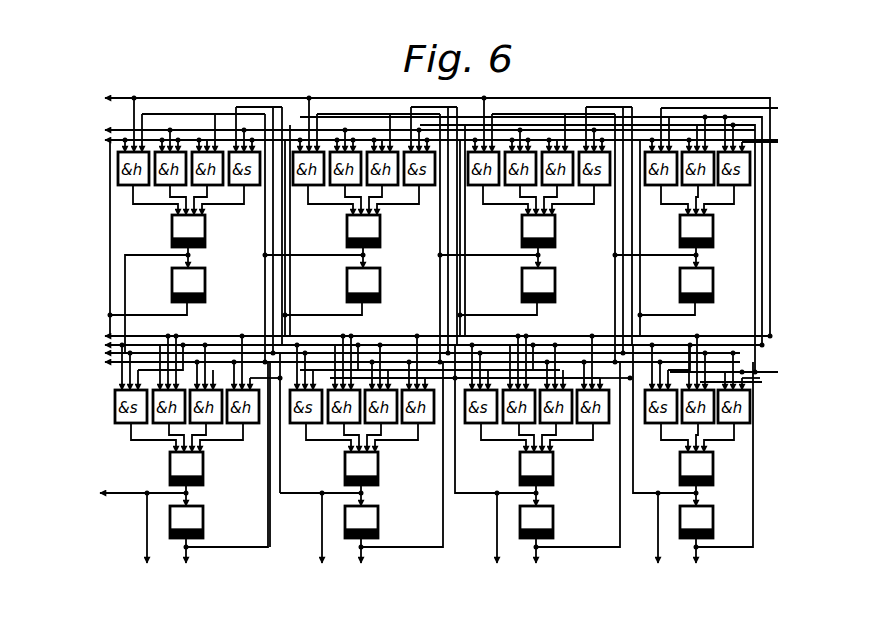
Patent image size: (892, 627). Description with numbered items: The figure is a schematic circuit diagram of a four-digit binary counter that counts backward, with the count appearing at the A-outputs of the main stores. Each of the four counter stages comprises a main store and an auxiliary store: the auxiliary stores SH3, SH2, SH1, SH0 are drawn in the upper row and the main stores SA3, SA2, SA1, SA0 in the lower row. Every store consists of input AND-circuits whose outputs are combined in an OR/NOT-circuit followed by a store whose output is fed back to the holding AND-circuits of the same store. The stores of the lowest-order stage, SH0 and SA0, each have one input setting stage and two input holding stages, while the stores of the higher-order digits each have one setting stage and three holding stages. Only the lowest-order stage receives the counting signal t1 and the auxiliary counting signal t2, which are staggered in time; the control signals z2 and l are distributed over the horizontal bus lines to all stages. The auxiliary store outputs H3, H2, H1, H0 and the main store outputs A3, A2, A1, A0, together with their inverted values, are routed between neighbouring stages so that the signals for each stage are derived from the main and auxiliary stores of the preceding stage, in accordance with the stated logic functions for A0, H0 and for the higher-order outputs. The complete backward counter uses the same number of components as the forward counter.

The auxiliary store SH3 is at (247, 248).
The auxiliary store SH2 is at (422, 248).
The auxiliary store SH1 is at (597, 248).
The auxiliary store SH0 is at (755, 248).
The main store SA3 is at (247, 485).
The main store SA2 is at (422, 485).
The main store SA1 is at (597, 485).
The main store SA0 is at (755, 485).
The auxiliary store output H3 is at (208, 254).
The auxiliary store output H2 is at (383, 254).
The auxiliary store output H1 is at (558, 254).
The auxiliary store output H0 is at (716, 254).
The main store output A3 is at (151, 575).
The main store output A2 is at (326, 575).
The main store output A1 is at (501, 575).
The main store output A0 is at (661, 575).
The auxiliary counting signal t2 is at (789, 100).
The control signal L l is at (787, 322).
The control signal z2 is at (785, 352).
The counting signal t1 is at (789, 381).